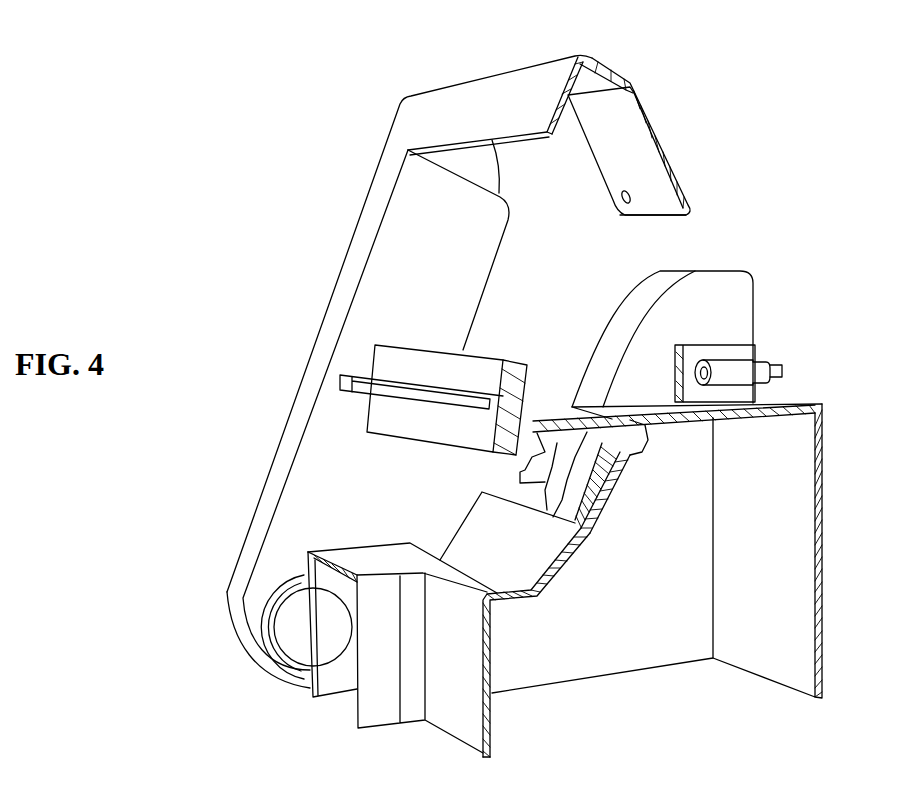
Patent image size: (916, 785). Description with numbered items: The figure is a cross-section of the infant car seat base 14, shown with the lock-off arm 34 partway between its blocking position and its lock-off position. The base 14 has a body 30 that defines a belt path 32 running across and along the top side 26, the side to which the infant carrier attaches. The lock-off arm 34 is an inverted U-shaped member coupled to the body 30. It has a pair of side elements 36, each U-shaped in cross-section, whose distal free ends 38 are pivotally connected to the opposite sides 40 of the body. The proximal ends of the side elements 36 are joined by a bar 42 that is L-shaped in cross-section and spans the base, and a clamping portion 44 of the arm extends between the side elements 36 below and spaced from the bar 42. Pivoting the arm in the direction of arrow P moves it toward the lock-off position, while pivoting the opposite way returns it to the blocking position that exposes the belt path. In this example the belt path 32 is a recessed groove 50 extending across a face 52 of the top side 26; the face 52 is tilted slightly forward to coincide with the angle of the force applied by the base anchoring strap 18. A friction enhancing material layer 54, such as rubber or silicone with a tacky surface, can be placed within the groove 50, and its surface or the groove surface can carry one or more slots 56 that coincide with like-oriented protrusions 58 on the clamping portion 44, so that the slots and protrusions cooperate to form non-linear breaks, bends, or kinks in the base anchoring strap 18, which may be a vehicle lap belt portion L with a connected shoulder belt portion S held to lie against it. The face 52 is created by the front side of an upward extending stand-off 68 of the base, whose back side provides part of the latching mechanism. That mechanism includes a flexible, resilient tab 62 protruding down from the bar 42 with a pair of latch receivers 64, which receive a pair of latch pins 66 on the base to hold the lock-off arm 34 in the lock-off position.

The base 14 is at (802, 203).
The base anchoring strap 18 is at (537, 489).
The top side 26 is at (363, 556).
The body 30 is at (828, 532).
The belt path 32 is at (505, 472).
The lock-off arm 34 is at (308, 324).
The side elements 36 is at (346, 259).
The free end 38 is at (262, 650).
The opposite sides 40 is at (603, 590).
The bar 42 is at (600, 60).
The clamping portion 44 is at (445, 365).
The recessed groove 50 is at (544, 432).
The face 52 is at (542, 548).
The friction enhancing material layer 54 is at (613, 505).
The slots 56 is at (520, 437).
The protrusions 58 is at (527, 384).
The tab 62 is at (635, 152).
The receivers 64 is at (623, 203).
The latch pins 66 is at (775, 363).
The stand-off 68 is at (780, 403).
The arrow P is at (345, 188).
The lap belt portion L is at (565, 441).
The shoulder belt portion S is at (602, 443).